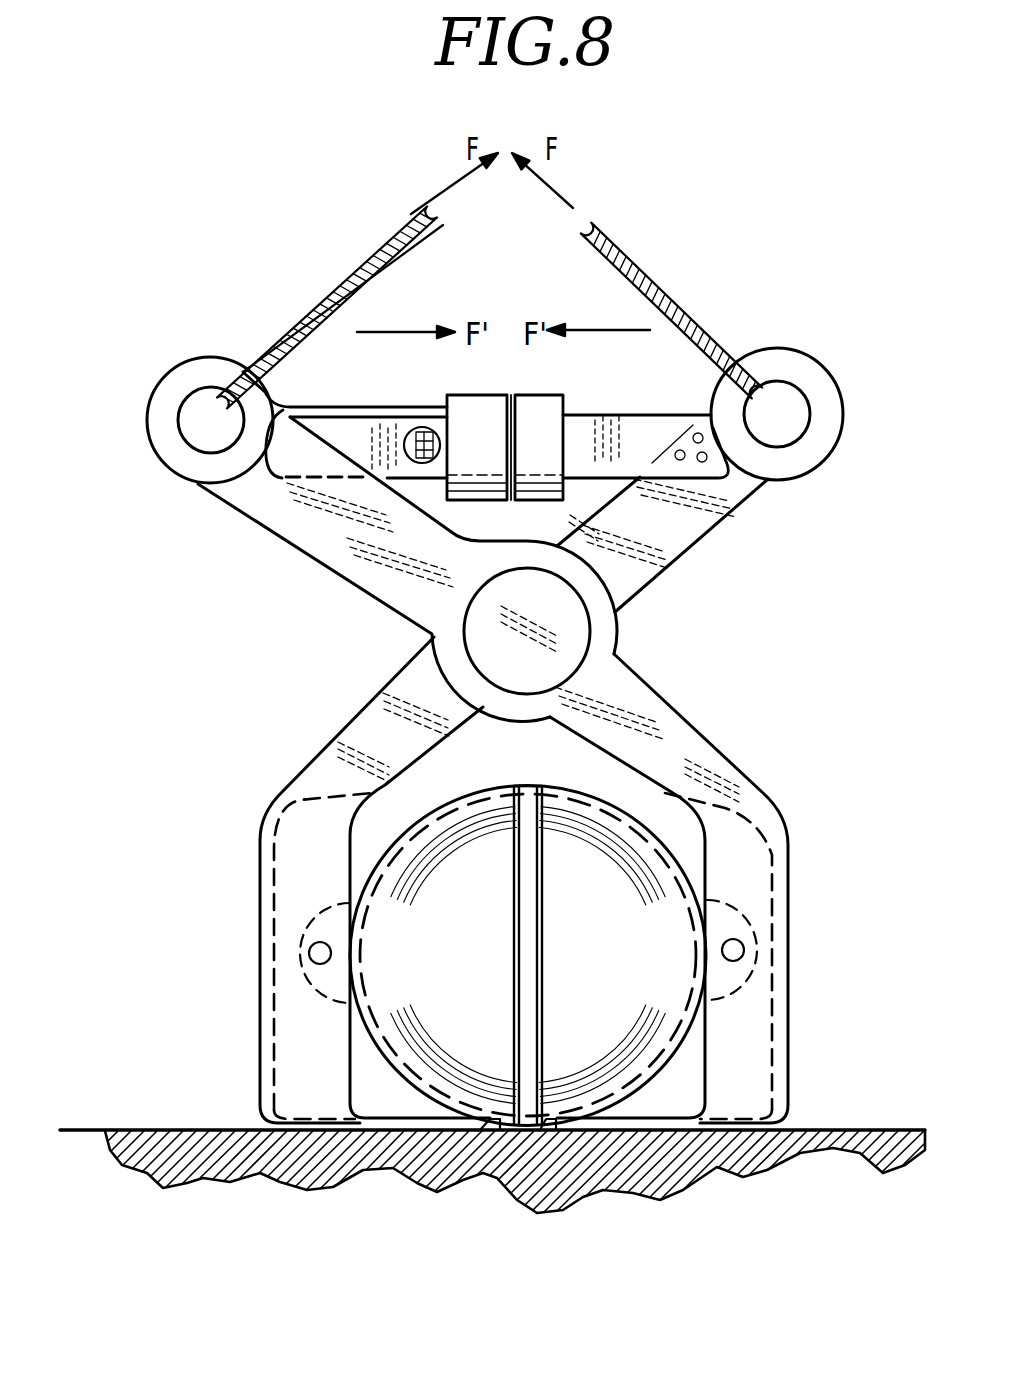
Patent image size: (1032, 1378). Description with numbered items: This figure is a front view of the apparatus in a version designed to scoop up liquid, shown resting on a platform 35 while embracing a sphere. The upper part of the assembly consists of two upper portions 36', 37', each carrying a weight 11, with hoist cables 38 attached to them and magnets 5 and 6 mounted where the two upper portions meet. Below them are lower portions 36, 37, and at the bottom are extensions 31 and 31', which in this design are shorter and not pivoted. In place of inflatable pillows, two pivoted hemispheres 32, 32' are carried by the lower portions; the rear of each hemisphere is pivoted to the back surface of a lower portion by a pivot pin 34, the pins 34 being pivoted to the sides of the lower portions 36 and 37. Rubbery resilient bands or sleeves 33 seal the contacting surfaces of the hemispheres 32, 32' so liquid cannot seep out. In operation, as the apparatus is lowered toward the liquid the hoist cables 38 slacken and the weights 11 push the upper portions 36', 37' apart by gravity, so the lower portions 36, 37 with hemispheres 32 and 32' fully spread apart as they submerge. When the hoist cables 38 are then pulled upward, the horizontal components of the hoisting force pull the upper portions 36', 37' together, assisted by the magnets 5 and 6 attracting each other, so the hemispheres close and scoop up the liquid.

The magnet 5 is at (488, 403).
The magnet 6 is at (543, 410).
The weight 11 is at (821, 358).
The extension 31 is at (319, 1183).
The extension 31' is at (711, 1185).
The pivoted hemisphere 32 is at (485, 1185).
The pivoted hemisphere 32' is at (561, 1199).
The rubbery resilient band or sleeve 33 is at (540, 787).
The pivot pin 34 is at (310, 952).
The platform 35 is at (215, 1128).
The lower portion 36 is at (315, 880).
The upper portion 36' is at (689, 544).
The lower portion 37 is at (722, 888).
The upper portion 37' is at (407, 569).
The hoist cable 38 is at (340, 288).